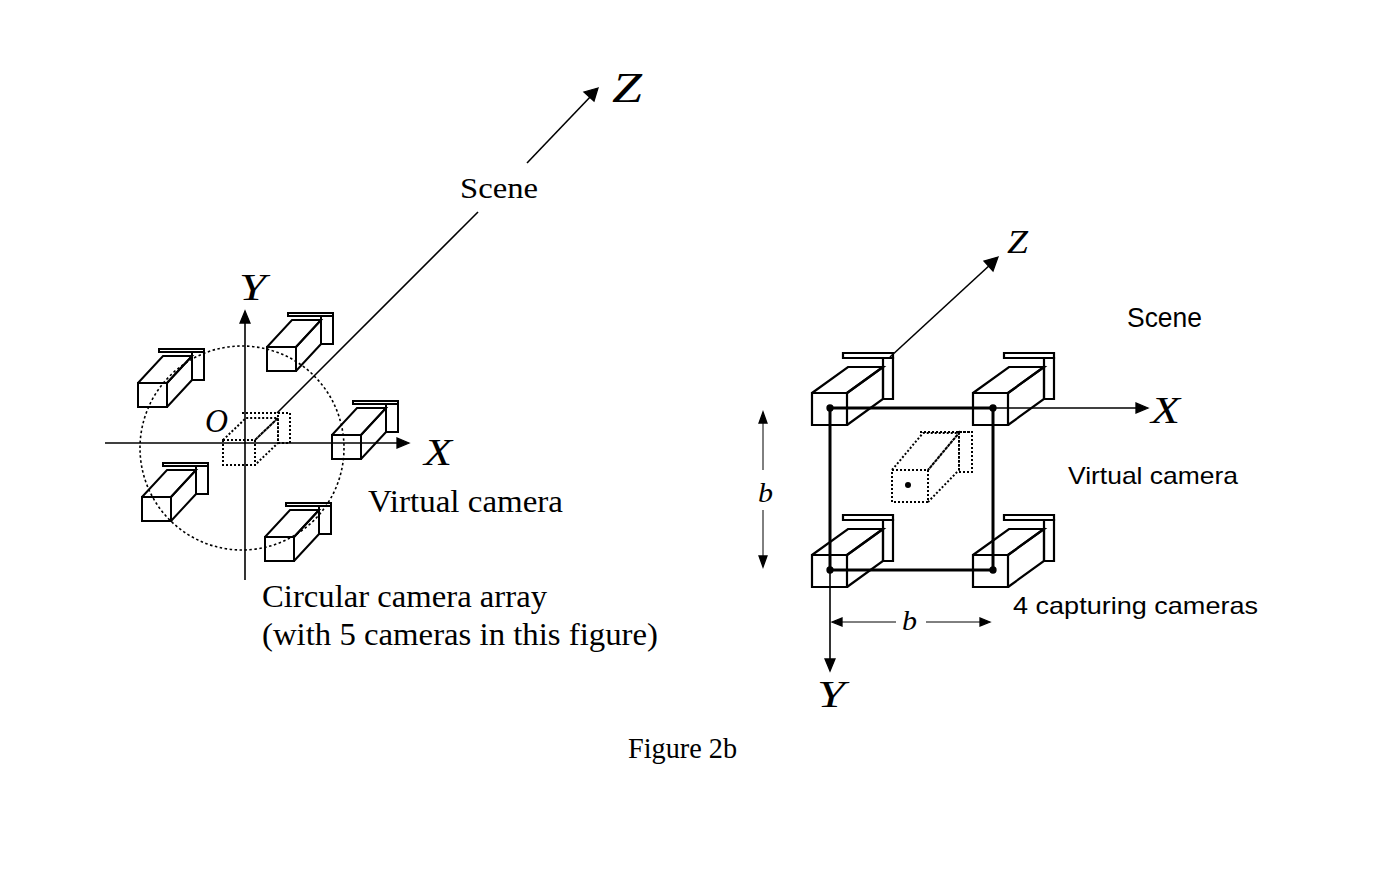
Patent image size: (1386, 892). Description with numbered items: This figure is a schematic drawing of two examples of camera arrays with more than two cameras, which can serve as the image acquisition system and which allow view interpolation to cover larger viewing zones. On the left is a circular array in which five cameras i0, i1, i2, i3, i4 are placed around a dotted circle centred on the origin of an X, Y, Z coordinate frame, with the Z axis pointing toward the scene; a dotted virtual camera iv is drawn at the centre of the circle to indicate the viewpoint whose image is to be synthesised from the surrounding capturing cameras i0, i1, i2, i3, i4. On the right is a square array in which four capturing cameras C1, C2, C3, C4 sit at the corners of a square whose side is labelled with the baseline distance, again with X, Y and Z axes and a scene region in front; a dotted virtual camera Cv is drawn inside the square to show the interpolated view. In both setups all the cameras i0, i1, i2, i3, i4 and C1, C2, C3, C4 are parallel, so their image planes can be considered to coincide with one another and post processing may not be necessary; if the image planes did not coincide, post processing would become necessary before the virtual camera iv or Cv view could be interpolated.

The capturing camera i0 of circular array i0 is at (375, 415).
The capturing camera i1 of circular array i1 is at (305, 323).
The capturing camera i2 of circular array i2 is at (171, 353).
The capturing camera i3 of circular array i3 is at (155, 492).
The capturing camera i4 of circular array i4 is at (312, 534).
The virtual camera of circular array iv is at (357, 500).
The capturing camera C1 is at (835, 389).
The capturing camera C2 is at (995, 389).
The capturing camera C3 is at (834, 551).
The capturing camera C4 is at (996, 551).
The virtual camera Cv is at (1053, 472).